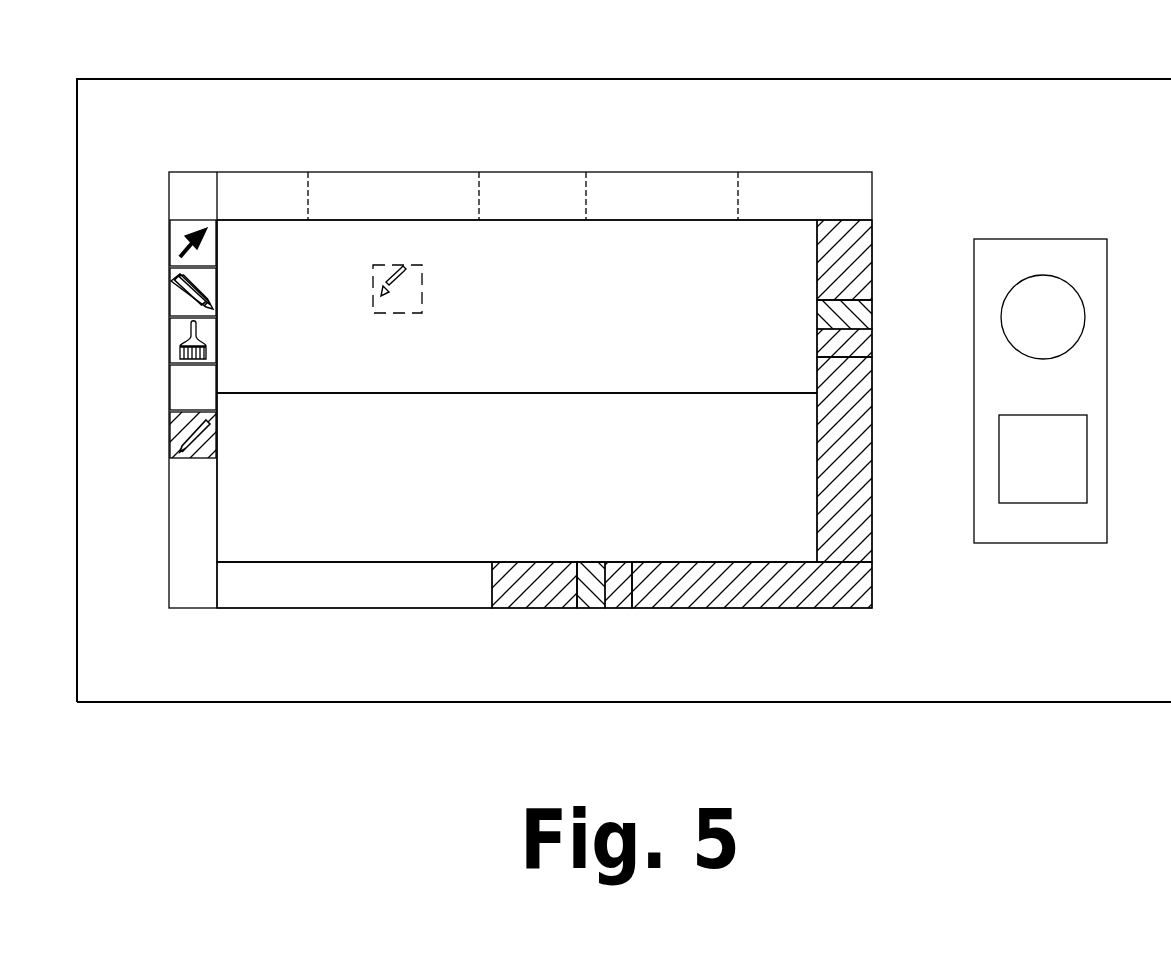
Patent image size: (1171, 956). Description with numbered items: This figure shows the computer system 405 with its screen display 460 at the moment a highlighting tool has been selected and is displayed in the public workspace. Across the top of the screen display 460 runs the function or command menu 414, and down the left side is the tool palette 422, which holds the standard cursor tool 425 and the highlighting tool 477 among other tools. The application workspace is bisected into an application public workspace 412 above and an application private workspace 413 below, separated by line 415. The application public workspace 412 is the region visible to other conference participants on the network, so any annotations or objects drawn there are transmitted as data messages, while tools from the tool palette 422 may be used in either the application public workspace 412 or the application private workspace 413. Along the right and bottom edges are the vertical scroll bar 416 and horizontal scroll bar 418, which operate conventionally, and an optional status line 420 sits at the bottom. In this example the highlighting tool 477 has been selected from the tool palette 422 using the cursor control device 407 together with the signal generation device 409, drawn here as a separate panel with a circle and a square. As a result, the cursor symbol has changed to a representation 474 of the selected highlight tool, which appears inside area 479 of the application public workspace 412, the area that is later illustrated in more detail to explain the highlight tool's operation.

The computer system 405 is at (868, 78).
The screen display 460 is at (882, 160).
The function or command menu 414 is at (738, 172).
The tool palette 422 is at (168, 222).
The standard cursor tool 425 is at (180, 245).
The highlighting tool 477 is at (218, 437).
The application public workspace 412 is at (517, 306).
The application private workspace 413 is at (517, 477).
The line 415 is at (532, 393).
The representation of the selected highlight tool 474 is at (388, 284).
The area 479 is at (404, 314).
The vertical scroll bar 416 is at (872, 220).
The horizontal scroll bar 418 is at (872, 609).
The status line 420 is at (492, 609).
The cursor control device 407 is at (1023, 239).
The signal generation device 409 is at (1063, 504).